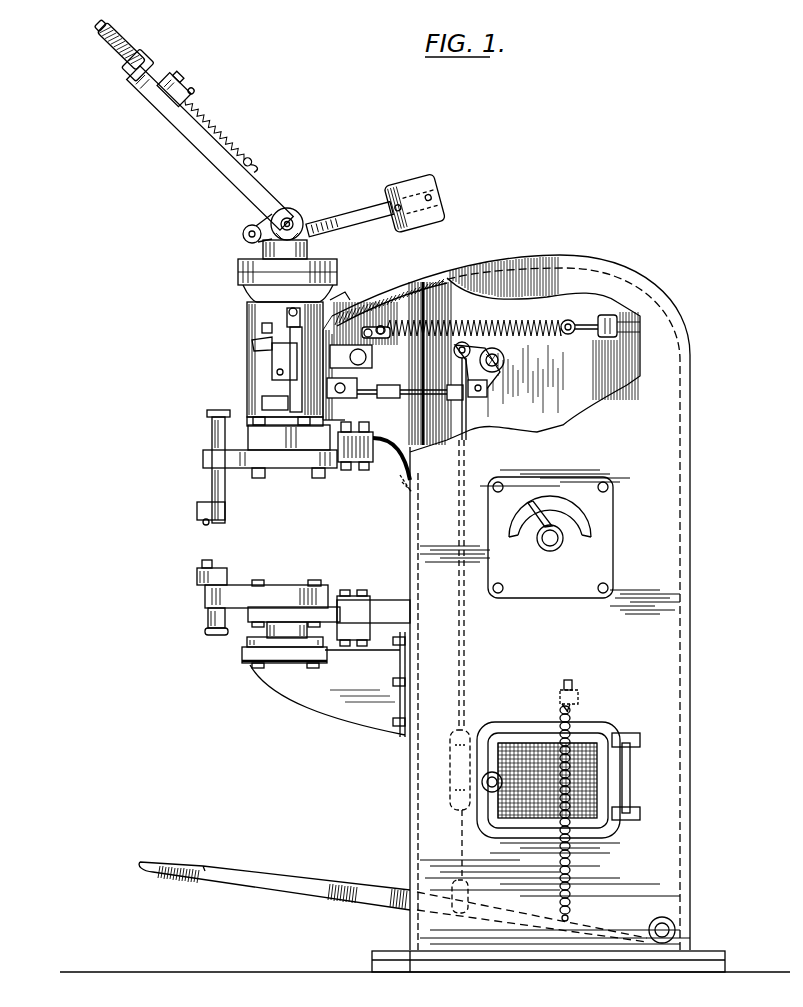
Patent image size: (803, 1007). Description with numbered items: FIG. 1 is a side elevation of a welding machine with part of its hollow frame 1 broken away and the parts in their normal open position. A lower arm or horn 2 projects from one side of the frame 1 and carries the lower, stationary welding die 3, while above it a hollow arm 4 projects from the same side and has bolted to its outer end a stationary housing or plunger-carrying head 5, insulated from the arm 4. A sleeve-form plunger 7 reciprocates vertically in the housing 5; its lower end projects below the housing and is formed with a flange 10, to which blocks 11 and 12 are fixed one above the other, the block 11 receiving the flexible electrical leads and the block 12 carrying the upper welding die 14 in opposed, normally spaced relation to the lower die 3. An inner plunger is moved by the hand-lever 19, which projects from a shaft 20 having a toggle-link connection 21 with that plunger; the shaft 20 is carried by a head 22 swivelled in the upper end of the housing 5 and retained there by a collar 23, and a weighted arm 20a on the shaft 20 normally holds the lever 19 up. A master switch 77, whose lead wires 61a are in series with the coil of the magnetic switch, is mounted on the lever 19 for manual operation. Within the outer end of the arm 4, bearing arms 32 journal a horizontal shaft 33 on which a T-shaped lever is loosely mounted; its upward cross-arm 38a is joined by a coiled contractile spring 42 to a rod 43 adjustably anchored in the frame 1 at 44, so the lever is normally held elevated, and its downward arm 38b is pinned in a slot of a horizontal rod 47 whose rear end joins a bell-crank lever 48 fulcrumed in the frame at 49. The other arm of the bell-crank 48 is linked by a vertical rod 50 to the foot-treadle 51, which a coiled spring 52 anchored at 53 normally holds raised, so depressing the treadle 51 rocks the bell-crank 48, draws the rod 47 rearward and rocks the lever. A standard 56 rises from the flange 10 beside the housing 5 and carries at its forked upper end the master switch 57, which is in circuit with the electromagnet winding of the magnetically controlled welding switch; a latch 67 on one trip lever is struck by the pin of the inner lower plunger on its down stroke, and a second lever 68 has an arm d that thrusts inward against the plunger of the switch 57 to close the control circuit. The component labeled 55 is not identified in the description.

The machine frame 1 is at (673, 449).
The lower arm or horn 2 is at (317, 695).
The lower stationary electrode or welding die 3 is at (212, 572).
The hollow arm or projection 4 is at (338, 316).
The stationary housing or plunger carrying head 5 is at (265, 303).
The plunger 7 is at (262, 403).
The flange or enlargement 10 is at (268, 432).
The block 11 is at (352, 464).
The block 12 is at (210, 463).
The upper electrode or welding-die 14 is at (205, 518).
The hand-lever 19 is at (217, 173).
The shaft 20 is at (288, 221).
The weighted arm 20a is at (352, 220).
The toggle-link connection 21 is at (247, 232).
The head 22 is at (250, 262).
The collar 23 is at (325, 266).
The bearing arms 32 is at (337, 300).
The shaft 33 is at (362, 357).
The cross-arm of lever 38a is at (378, 327).
The lower arm of lever 38b is at (358, 383).
The coiled contractile spring 42 is at (497, 320).
The rod or member 43 is at (587, 337).
The anchorage of rod 44 is at (612, 320).
The horizontally projecting rod 47 is at (457, 384).
The bell-crank lever 48 is at (490, 388).
The fulcrum of bell-crank lever 49 is at (503, 358).
The vertically disposed rod 50 is at (467, 430).
The foot-treadle 51 is at (325, 890).
The coiled contractile spring 52 is at (575, 870).
The anchorage of treadle spring 53 is at (580, 696).
The cable 55 is at (333, 398).
The standard 56 is at (293, 407).
The master switch 57 is at (298, 305).
The lead wires 61a is at (187, 110).
The latch 67 is at (275, 366).
The lever 68 is at (260, 346).
The master switch 77 is at (183, 97).
The arm of lever d is at (262, 328).